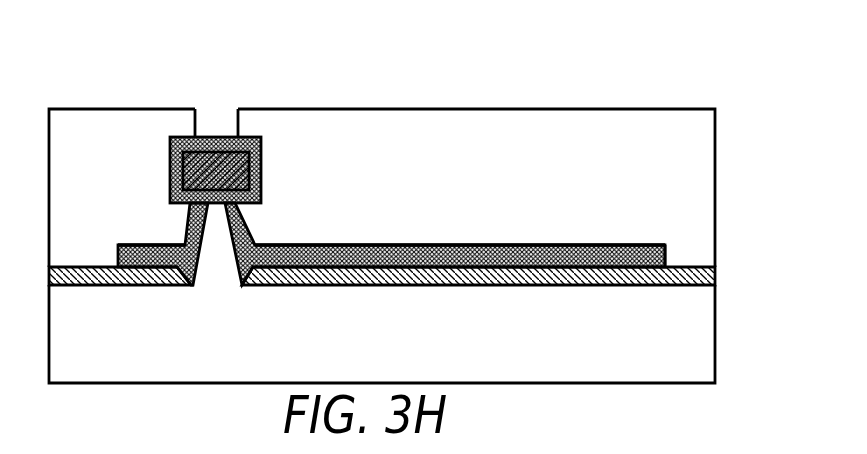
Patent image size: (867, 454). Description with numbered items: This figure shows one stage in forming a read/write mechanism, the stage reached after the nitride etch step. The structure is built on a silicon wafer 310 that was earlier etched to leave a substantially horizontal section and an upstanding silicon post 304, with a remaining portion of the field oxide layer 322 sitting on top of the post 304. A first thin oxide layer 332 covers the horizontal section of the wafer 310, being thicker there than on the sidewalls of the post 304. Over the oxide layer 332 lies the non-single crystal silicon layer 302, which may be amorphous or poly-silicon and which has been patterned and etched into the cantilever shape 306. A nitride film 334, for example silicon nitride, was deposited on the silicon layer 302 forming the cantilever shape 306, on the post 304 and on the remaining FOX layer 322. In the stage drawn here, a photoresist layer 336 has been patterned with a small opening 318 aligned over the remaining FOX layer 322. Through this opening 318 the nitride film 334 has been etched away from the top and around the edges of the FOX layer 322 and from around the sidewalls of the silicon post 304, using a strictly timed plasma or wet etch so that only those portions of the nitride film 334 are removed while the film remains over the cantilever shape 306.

The non-single crystal silicon layer 302 is at (665, 257).
The silicon post 304 is at (234, 223).
The cantilever shape 306 is at (565, 245).
The silicon wafer 310 is at (715, 330).
The small opening 318 is at (213, 123).
The remaining portion of the FOX layer 322 is at (261, 167).
The first thin oxide layer 332 is at (715, 275).
The nitride film 334 is at (438, 245).
The photoresist layer 336 is at (600, 109).